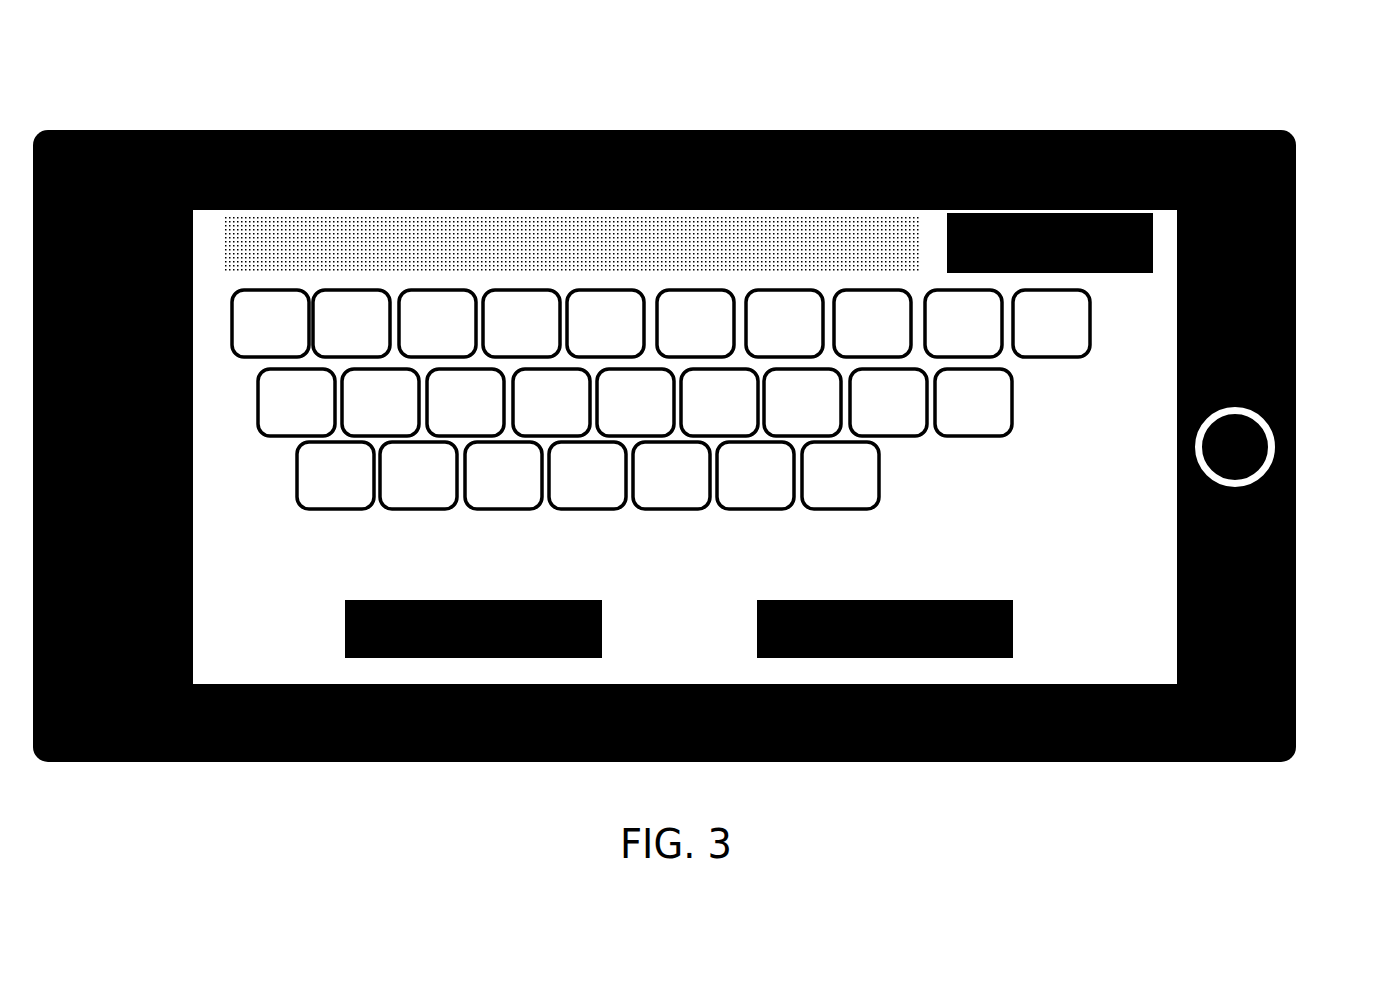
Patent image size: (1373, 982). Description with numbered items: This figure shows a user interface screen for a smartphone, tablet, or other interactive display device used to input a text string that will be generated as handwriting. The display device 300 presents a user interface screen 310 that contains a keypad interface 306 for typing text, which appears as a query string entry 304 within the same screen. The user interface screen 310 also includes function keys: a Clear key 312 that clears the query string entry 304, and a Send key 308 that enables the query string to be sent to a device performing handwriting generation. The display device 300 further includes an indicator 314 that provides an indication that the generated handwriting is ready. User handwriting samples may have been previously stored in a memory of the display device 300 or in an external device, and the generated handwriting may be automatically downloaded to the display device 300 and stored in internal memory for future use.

The display device 300 is at (563, 105).
The query string entry 304 is at (563, 225).
The keypad interface 306 is at (977, 488).
The Send key 308 is at (957, 660).
The user interface screen 310 is at (1145, 335).
The Clear key 312 is at (413, 660).
The indicator 314 is at (1050, 213).